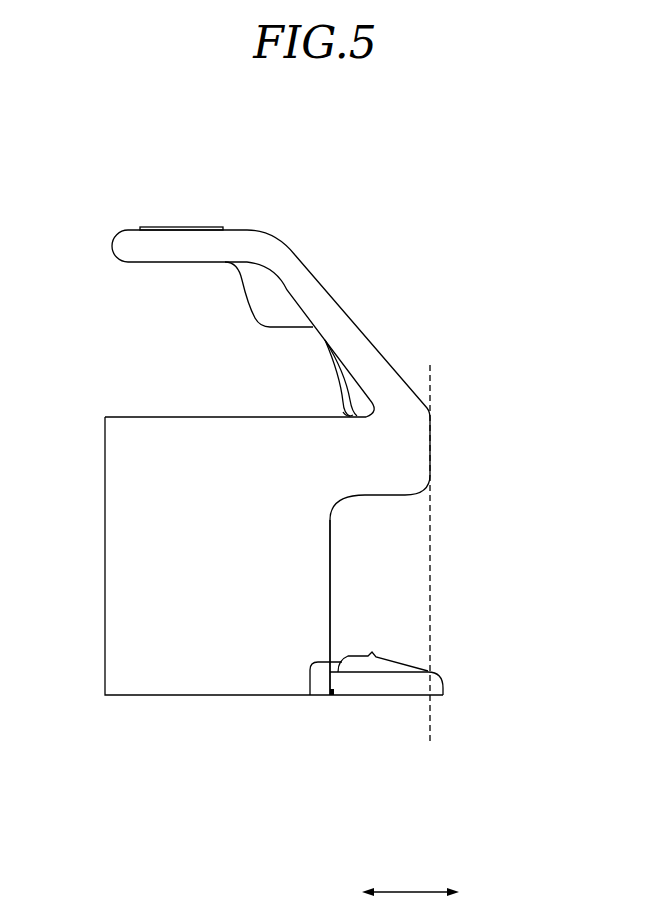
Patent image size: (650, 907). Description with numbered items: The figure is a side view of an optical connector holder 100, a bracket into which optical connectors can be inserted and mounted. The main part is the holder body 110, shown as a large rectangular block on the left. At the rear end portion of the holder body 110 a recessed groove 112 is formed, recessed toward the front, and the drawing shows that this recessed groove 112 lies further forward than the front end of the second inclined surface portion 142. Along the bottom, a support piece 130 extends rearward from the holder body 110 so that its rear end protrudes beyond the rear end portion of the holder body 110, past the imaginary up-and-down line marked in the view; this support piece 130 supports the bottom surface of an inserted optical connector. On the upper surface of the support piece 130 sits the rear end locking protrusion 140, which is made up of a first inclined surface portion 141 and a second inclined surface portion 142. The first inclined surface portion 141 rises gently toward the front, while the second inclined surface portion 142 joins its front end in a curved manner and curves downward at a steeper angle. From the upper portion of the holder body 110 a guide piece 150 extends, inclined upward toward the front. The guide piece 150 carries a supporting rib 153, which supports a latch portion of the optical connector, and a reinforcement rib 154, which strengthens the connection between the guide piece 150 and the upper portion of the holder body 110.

The optical connector holder 100 is at (320, 200).
The holder body 110 is at (118, 517).
The recessed groove 112 is at (331, 582).
The support piece 130 is at (405, 686).
The rear end locking protrusion 140 is at (383, 748).
The first inclined surface portion 141 is at (376, 662).
The second inclined surface portion 142 is at (312, 700).
The guide piece 150 is at (362, 335).
The supporting rib 153 is at (253, 300).
The reinforcement rib 154 is at (348, 380).